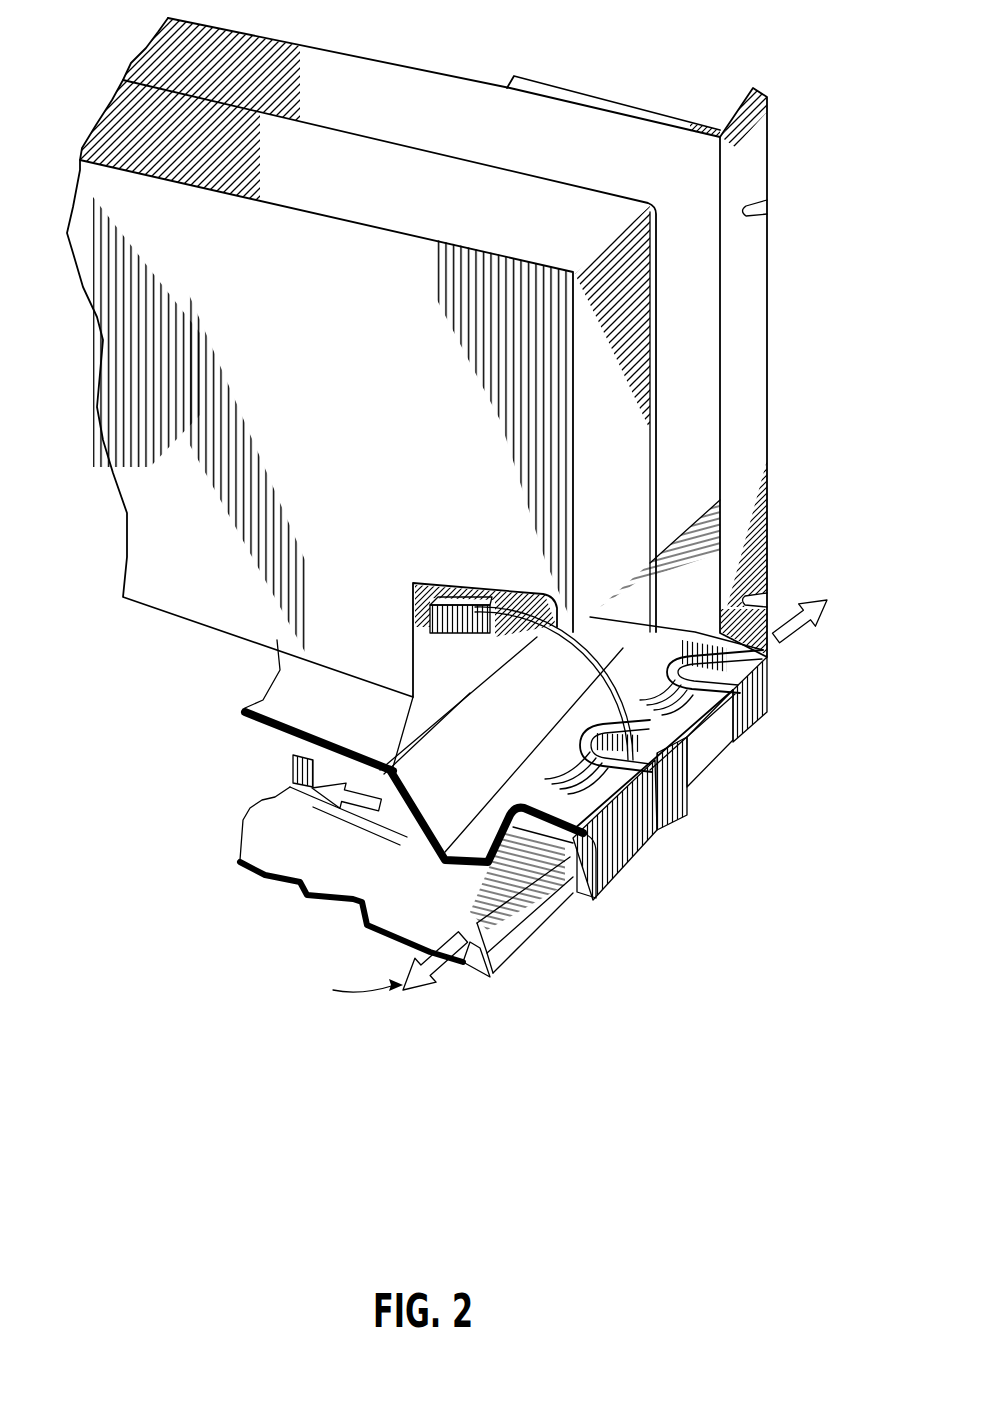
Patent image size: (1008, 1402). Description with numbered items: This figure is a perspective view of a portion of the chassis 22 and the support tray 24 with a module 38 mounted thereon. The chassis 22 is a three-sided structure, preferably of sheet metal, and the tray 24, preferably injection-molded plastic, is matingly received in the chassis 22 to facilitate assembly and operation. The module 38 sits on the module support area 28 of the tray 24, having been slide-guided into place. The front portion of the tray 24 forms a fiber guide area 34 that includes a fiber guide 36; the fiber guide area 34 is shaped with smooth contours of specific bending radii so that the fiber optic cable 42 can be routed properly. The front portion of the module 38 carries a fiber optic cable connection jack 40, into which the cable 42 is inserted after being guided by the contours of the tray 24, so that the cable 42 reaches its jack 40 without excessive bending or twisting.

The chassis 22 is at (538, 930).
The support tray 24 is at (773, 677).
The module support area 28 is at (318, 712).
The fiber guide area 34 is at (407, 832).
The fiber guide 36 is at (700, 723).
The module 38 is at (367, 93).
The fiber optic cable connection jack 40 is at (425, 613).
The fiber optic cable 42 is at (572, 653).